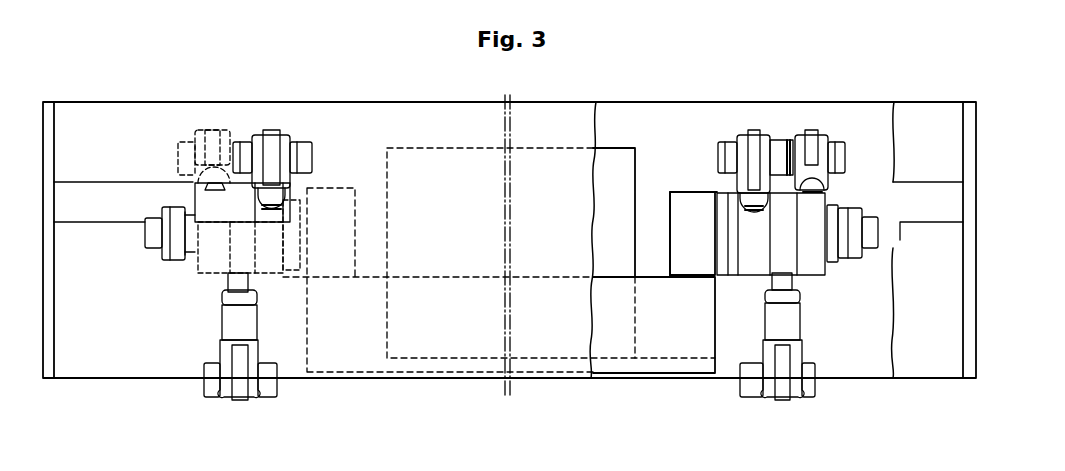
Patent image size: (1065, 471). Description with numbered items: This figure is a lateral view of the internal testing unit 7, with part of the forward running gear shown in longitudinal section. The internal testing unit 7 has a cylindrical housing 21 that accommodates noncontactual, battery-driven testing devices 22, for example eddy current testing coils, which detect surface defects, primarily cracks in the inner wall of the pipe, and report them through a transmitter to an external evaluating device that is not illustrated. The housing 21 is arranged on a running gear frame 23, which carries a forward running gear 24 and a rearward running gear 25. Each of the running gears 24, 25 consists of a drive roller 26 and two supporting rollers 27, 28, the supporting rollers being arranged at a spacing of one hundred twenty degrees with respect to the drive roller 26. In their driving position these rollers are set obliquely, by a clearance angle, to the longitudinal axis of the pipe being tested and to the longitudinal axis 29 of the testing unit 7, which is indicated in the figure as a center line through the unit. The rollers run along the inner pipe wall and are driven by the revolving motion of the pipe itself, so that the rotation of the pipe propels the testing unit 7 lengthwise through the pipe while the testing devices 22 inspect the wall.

The internal testing unit 7 is at (678, 99).
The cylindrical housing 21 is at (408, 102).
The testing devices 22 is at (612, 148).
The running gear frame 23 is at (652, 367).
The forward running gear 24 is at (787, 129).
The rearward running gear 25 is at (249, 128).
The drive roller 26 is at (239, 400).
The supporting roller 27 is at (283, 135).
The supporting roller 28 is at (813, 135).
The longitudinal axis of the testing unit 29 is at (62, 233).